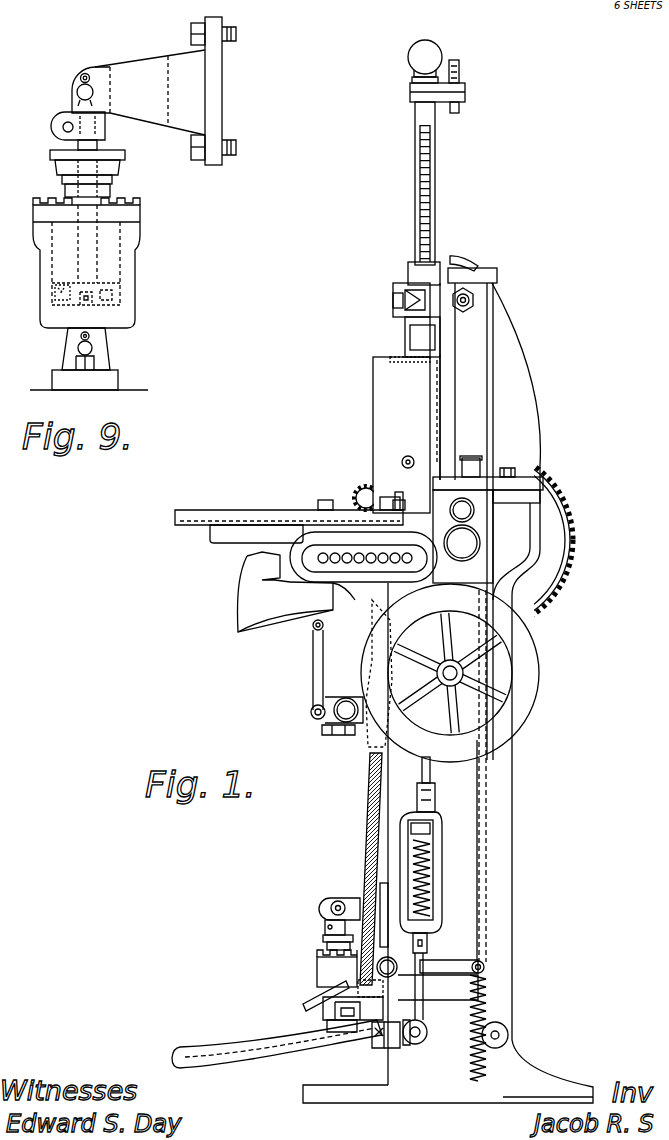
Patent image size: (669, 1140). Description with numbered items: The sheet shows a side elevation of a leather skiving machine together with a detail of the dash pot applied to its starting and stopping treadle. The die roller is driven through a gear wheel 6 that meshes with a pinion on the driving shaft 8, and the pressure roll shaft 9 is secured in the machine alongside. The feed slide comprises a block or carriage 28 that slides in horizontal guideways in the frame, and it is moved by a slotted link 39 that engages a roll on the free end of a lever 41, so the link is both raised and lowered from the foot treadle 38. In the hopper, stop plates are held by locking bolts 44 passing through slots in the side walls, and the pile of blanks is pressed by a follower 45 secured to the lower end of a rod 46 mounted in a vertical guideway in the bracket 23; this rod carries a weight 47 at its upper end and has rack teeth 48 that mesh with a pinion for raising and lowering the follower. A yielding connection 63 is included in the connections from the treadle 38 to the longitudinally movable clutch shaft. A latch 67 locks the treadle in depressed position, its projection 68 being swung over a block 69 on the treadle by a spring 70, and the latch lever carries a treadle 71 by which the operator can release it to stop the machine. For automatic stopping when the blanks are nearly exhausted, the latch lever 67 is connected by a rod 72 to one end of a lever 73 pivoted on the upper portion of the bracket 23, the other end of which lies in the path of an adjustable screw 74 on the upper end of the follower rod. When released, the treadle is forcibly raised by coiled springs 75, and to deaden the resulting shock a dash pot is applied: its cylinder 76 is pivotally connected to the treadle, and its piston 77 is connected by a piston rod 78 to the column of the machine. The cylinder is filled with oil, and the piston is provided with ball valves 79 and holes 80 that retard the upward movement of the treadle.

In FIG. 1, the gear wheel 6 is at (557, 536).
In FIG. 1, the driving shaft 8 is at (458, 672).
In FIG. 1, the pressure roll shaft 9 is at (465, 511).
In FIG. 1, the bracket 23 is at (513, 376).
In FIG. 1, the block or carriage 28 is at (290, 552).
In FIG. 1, the foot treadle 38 is at (243, 1050).
In FIG. 1, the link 39 is at (250, 585).
In FIG. 1, the lever 41 is at (357, 607).
In FIG. 1, the locking bolt 44 is at (402, 462).
In FIG. 1, the follower 45 is at (410, 335).
In FIG. 1, the rod 46 is at (416, 114).
In FIG. 1, the weight 47 is at (420, 64).
In FIG. 1, the rack teeth 48 is at (420, 152).
In FIG. 1, the yielding connection 63 is at (432, 870).
In FIG. 1, the latch 67 is at (433, 968).
In FIG. 1, the projection 68 is at (398, 1045).
In FIG. 1, the block 69 is at (377, 1030).
In FIG. 1, the spring 70 is at (482, 1005).
In FIG. 1, the treadle 71 is at (318, 997).
In FIG. 1, the rod 72 is at (482, 778).
In FIG. 1, the lever 73 is at (470, 266).
In FIG. 1, the adjustable screw 74 is at (460, 102).
In FIG. 1, the coiled spring 75 is at (372, 842).
In FIG. 9, the cylinder 76 is at (130, 262).
In FIG. 1, the cylinder 76 is at (325, 968).
In FIG. 9, the piston 77 is at (95, 310).
In FIG. 9, the piston rod 78 is at (80, 140).
In FIG. 9, the ball valve 79 is at (60, 300).
In FIG. 9, the hole 80 is at (110, 300).